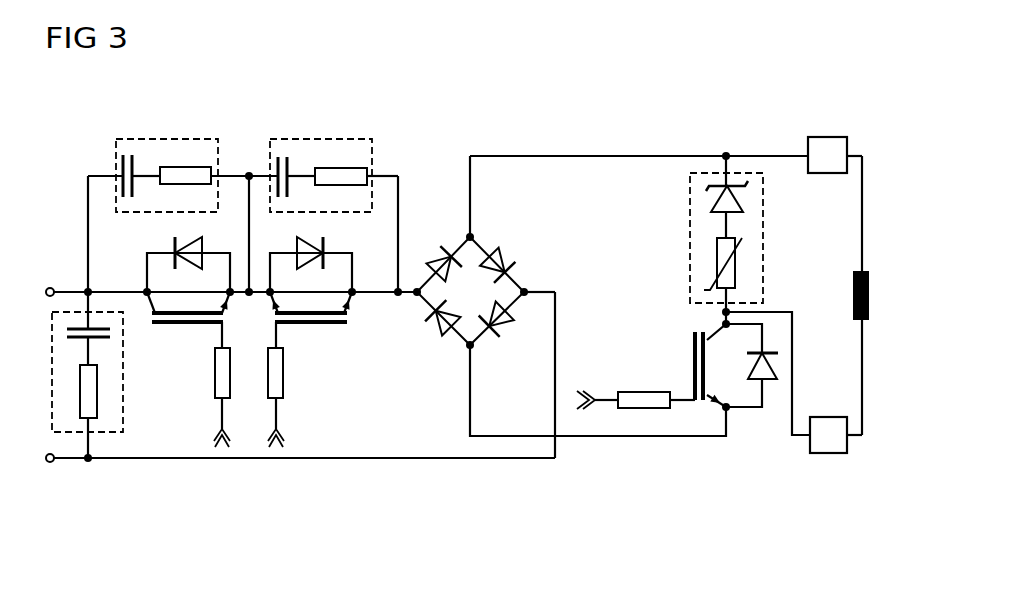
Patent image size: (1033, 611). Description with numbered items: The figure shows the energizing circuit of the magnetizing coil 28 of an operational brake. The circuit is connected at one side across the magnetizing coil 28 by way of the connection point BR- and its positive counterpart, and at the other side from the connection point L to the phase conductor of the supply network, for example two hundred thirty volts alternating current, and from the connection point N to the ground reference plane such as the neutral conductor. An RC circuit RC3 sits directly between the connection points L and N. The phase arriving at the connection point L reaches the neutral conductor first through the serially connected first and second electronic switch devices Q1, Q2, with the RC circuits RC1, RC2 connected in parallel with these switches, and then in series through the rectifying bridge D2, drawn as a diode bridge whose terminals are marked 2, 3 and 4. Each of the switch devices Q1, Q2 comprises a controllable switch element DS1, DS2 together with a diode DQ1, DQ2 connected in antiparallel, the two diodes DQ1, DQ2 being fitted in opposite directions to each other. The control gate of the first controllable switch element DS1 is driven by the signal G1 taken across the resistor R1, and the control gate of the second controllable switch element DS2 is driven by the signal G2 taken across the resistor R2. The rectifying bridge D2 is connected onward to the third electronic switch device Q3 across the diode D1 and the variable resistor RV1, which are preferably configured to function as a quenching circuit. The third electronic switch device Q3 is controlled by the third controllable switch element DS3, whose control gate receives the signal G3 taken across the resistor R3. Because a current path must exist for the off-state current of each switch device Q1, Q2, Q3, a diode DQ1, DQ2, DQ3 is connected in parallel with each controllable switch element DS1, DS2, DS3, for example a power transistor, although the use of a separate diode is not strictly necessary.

The RC circuit RC1 is at (163, 139).
The RC circuit RC2 is at (323, 139).
The RC circuit RC3 is at (104, 434).
The first electronic switch device Q1 is at (147, 272).
The second electronic switch device Q2 is at (352, 272).
The third electronic switch device Q3 is at (753, 409).
The diode DQ1 is at (174, 242).
The diode DQ2 is at (330, 243).
The diode DQ3 is at (772, 381).
The first controllable switch element DS1 is at (180, 324).
The second controllable switch element DS2 is at (323, 324).
The third controllable switch element DS3 is at (693, 345).
The resistor R1 is at (215, 392).
The resistor R2 is at (284, 370).
The resistor R3 is at (646, 410).
The signal G1 is at (215, 436).
The signal G2 is at (284, 428).
The signal G3 is at (593, 406).
The rectifying bridge D2 is at (490, 245).
The diode D1 is at (708, 198).
The variable resistor RV1 is at (717, 252).
The connection point BR- is at (828, 454).
The magnetizing coil 28 is at (853, 292).
The connection point L is at (40, 292).
The connection point N is at (40, 460).
The bridge node 2 is at (532, 279).
The bridge positive node 3 is at (457, 240).
The bridge negative node 4 is at (465, 348).